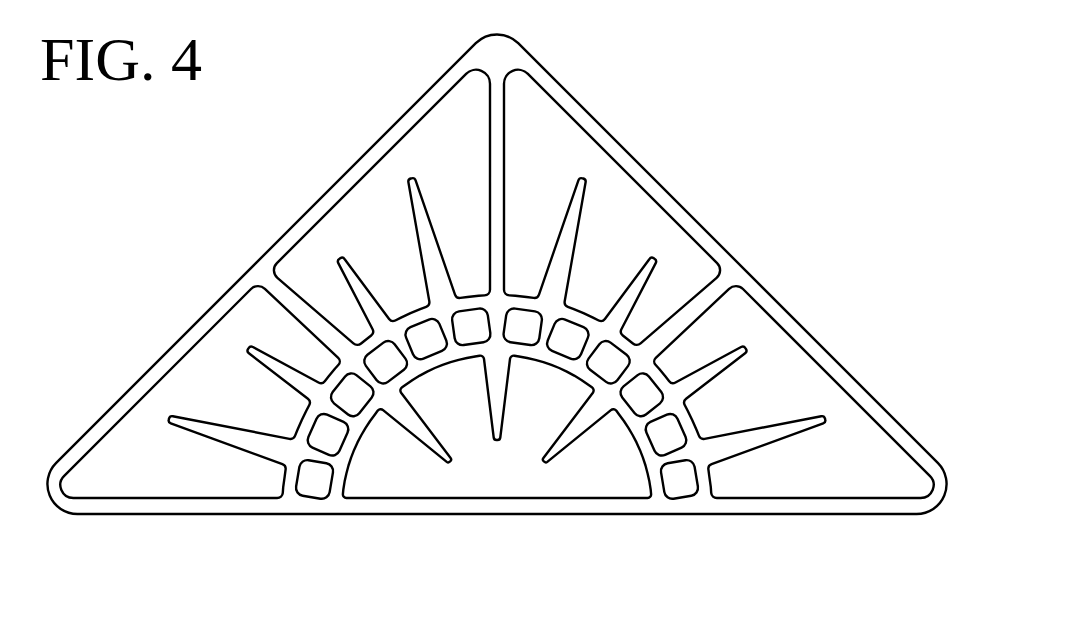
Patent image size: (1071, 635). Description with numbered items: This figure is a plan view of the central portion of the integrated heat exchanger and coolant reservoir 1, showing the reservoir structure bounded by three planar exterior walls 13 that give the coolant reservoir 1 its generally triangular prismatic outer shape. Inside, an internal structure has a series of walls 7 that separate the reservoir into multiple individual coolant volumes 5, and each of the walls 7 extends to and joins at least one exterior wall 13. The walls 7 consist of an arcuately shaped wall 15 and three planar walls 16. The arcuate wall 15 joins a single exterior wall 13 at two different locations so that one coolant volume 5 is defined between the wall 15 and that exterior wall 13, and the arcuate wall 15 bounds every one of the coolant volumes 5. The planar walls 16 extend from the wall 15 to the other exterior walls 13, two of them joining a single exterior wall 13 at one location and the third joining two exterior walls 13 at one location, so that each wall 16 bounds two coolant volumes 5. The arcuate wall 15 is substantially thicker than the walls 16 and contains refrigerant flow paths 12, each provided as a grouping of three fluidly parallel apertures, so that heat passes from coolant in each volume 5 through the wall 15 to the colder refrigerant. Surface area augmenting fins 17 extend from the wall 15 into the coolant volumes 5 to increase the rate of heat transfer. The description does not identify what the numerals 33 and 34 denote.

The coolant reservoir 1 is at (780, 192).
The coolant volumes 5 is at (450, 160).
The walls 7 is at (547, 309).
The refrigerant flow paths 12 is at (318, 483).
The exterior walls 13 is at (162, 352).
The arcuately shaped wall 15 is at (637, 443).
The planar walls 16 is at (505, 132).
The surface area augmenting fins 17 is at (414, 249).
The central rib 33 is at (430, 373).
The connecting rib 34 is at (468, 292).